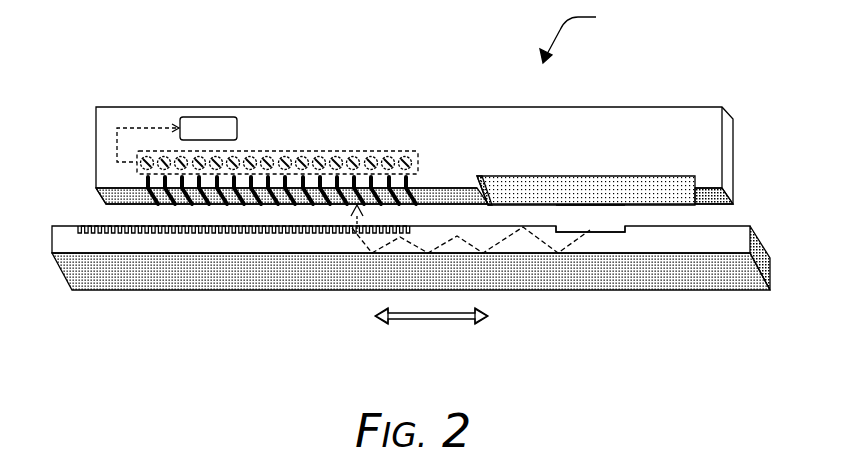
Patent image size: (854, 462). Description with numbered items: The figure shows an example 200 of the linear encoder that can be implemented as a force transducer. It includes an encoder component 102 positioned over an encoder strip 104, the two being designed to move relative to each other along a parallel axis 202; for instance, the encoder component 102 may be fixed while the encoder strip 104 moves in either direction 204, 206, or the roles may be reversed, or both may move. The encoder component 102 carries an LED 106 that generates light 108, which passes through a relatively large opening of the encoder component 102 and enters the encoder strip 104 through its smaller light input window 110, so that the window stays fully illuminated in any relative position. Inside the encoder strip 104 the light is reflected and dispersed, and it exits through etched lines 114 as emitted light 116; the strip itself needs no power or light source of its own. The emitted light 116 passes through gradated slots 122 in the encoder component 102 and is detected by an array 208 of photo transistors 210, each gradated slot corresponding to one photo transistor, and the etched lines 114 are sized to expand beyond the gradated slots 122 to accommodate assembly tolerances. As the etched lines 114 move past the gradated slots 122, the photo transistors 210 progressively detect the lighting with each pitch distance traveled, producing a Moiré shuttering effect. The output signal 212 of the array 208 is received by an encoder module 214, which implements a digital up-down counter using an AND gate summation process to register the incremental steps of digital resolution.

The example of the linear encoder 200 is at (586, 36).
The encoder component 102 is at (680, 123).
The encoder strip 104 is at (160, 268).
The LED 106 is at (553, 190).
The light 108 is at (590, 227).
The light input window 110 is at (613, 233).
The etched lines 114 is at (278, 232).
The emitted light 116 is at (352, 210).
The gradated slots 122 is at (418, 190).
The parallel axis 202 is at (403, 323).
The direction 204 is at (368, 325).
The direction 206 is at (526, 325).
The array of photo transistors 208 is at (373, 150).
The photo transistors 210 is at (311, 160).
The output signal 212 is at (130, 127).
The encoder module 214 is at (202, 117).